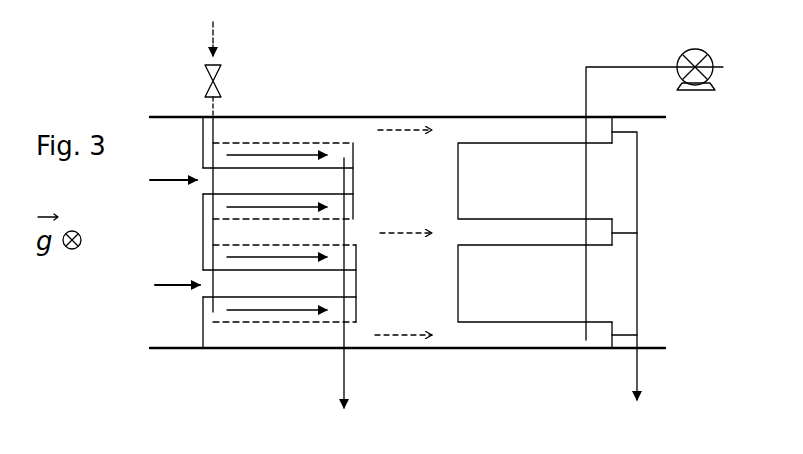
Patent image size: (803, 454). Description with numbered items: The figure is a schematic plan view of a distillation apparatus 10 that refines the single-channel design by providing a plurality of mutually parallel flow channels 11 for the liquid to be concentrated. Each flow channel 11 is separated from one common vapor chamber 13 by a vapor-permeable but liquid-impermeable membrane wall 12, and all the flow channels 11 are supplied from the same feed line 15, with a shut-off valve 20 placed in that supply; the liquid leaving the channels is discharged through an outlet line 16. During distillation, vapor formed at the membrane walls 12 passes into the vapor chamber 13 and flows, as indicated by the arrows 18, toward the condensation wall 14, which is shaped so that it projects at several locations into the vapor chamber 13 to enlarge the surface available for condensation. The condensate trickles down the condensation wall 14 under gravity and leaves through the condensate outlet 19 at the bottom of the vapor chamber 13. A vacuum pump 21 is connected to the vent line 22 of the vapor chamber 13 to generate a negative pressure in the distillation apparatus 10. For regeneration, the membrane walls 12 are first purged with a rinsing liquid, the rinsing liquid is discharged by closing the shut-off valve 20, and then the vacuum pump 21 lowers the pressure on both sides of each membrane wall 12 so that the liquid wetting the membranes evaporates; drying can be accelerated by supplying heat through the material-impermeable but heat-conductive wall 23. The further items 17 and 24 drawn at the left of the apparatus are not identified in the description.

The distillation apparatus 10 is at (355, 30).
The flow channel 11 is at (263, 150).
The membrane wall 12 is at (310, 147).
The vapor chamber 13 is at (293, 322).
The condensation wall 14 is at (255, 311).
The feed line 15 is at (210, 35).
The outlet line 16 is at (340, 365).
The inlet 17 is at (168, 182).
The arrows 18 is at (392, 237).
The condensate outlet 19 is at (638, 362).
The shut-off valve 20 is at (204, 74).
The vacuum pump 21 is at (683, 52).
The vent line 22 is at (585, 92).
The wall 23 is at (498, 145).
The inlet 24 is at (178, 290).